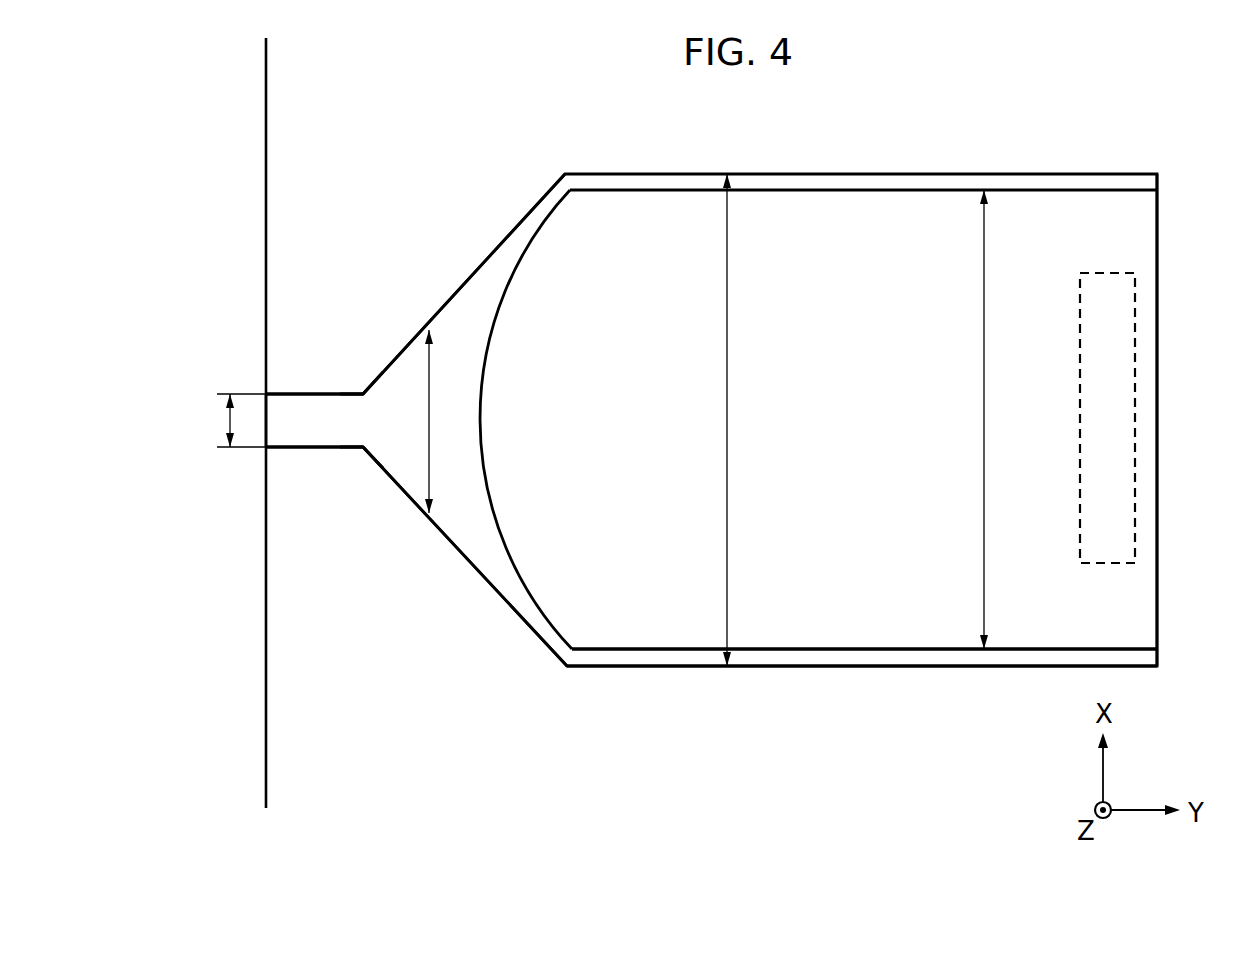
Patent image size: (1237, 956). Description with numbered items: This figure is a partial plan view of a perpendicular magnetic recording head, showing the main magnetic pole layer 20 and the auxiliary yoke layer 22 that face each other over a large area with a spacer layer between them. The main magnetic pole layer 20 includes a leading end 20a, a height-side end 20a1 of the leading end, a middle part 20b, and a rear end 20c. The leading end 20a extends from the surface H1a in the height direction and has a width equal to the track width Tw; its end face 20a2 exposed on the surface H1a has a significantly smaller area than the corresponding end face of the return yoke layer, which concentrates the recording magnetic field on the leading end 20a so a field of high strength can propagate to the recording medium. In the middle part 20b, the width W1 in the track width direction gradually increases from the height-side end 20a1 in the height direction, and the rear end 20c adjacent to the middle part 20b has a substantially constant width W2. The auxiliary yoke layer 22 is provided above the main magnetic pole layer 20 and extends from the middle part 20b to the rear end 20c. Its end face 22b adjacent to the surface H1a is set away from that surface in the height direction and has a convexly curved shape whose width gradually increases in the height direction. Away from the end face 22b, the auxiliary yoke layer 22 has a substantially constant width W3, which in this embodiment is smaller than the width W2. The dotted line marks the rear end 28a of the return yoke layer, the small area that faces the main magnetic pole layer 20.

The main magnetic pole layer 20 is at (650, 668).
The leading end 20a is at (300, 427).
The height-side end 20a1 is at (363, 390).
The end face 20a2 is at (265, 413).
The middle part 20b is at (473, 503).
The rear end 20c is at (875, 652).
The auxiliary yoke layer 22 is at (812, 190).
The end face 22b is at (482, 423).
The rear end 28a is at (1122, 337).
The surface H1a is at (265, 583).
The track width Tw is at (226, 420).
The width W1 is at (428, 395).
The width W2 is at (727, 592).
The width W3 is at (984, 583).